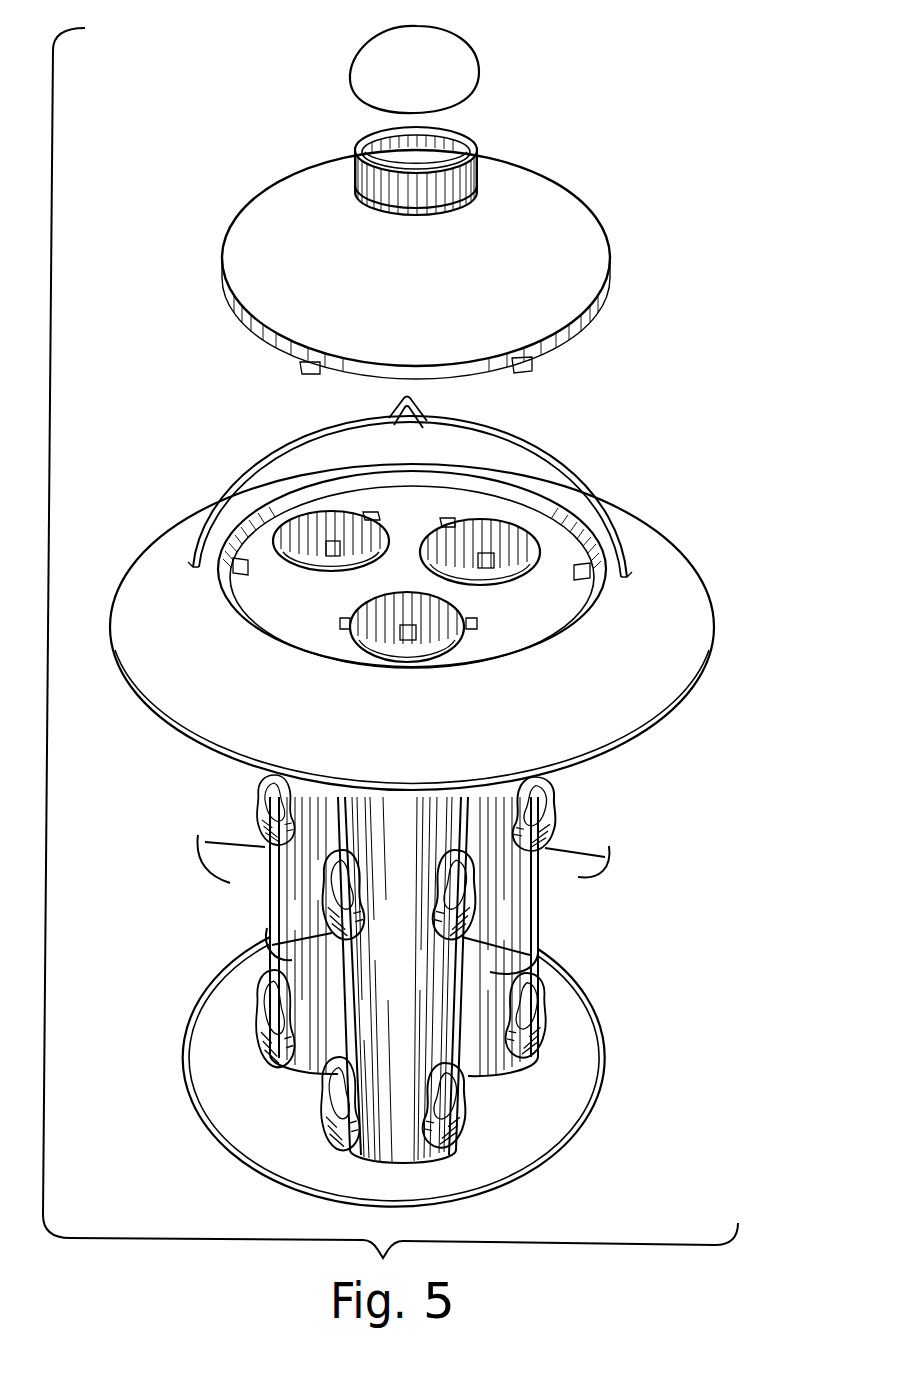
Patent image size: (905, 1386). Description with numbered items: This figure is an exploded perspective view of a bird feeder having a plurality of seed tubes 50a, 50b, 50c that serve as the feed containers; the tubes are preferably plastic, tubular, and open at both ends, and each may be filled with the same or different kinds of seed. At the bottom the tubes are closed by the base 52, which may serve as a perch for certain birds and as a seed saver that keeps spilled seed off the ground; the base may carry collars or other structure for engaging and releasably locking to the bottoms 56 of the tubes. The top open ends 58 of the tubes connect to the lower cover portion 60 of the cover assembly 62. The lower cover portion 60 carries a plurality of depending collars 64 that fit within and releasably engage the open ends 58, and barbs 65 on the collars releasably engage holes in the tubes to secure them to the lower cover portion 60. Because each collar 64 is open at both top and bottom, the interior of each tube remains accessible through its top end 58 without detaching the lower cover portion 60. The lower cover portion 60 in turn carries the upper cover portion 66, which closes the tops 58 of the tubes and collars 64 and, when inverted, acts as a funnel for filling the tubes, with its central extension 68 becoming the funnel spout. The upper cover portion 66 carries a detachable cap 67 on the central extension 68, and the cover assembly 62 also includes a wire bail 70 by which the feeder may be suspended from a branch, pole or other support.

The seed tube 50a is at (387, 1067).
The seed tube 50b is at (283, 907).
The seed tube 50c is at (537, 915).
The base 52 is at (580, 1083).
The bottoms of the tubes 56 is at (312, 1057).
The top open ends 58 is at (320, 562).
The lower cover portion 60 is at (695, 633).
The cover assembly 62 is at (668, 503).
The depending collars 64 is at (355, 557).
The barbs 65 is at (467, 552).
The upper cover portion 66 is at (578, 257).
The detachable cap 67 is at (463, 70).
The central extension 68 is at (474, 172).
The wire bail 70 is at (247, 467).